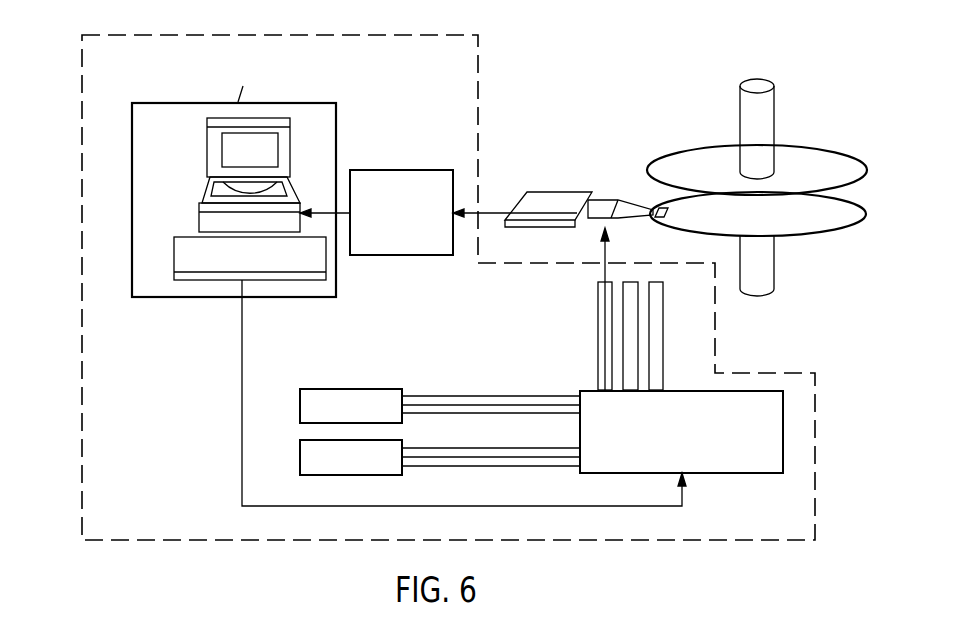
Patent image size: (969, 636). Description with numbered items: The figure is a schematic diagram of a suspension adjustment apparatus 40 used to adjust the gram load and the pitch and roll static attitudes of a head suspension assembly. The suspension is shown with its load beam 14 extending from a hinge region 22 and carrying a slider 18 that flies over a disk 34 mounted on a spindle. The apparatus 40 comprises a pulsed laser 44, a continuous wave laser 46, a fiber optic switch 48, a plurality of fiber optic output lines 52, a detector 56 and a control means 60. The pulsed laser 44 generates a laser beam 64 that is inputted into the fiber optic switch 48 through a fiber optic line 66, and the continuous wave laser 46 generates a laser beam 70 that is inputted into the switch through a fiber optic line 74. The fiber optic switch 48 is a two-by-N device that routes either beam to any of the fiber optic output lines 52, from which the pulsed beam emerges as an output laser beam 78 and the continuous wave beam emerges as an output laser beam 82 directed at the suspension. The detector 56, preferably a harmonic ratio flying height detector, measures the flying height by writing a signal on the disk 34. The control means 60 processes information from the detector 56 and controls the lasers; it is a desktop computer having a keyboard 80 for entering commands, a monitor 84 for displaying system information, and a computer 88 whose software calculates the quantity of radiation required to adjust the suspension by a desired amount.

The suspension adjustment apparatus 40 is at (72, 392).
The control means 60 is at (157, 102).
The monitor 84 is at (207, 143).
The computer 88 is at (203, 197).
The keyboard 80 is at (192, 280).
The detector 56 is at (407, 168).
The hinge region 22 is at (605, 197).
The load beam 14 is at (627, 198).
The slider 18 is at (670, 212).
The disk 34 is at (865, 166).
The output laser beam 78 is at (559, 309).
The output laser beam 82 is at (602, 250).
The fiber optic output lines 52 is at (598, 312).
The continuous wave laser 46 is at (298, 397).
The pulsed laser 44 is at (298, 453).
The laser beam 70 is at (432, 404).
The fiber optic line 74 is at (497, 396).
The laser beam 64 is at (442, 458).
The fiber optic line 66 is at (485, 467).
The fiber optic switch 48 is at (752, 468).